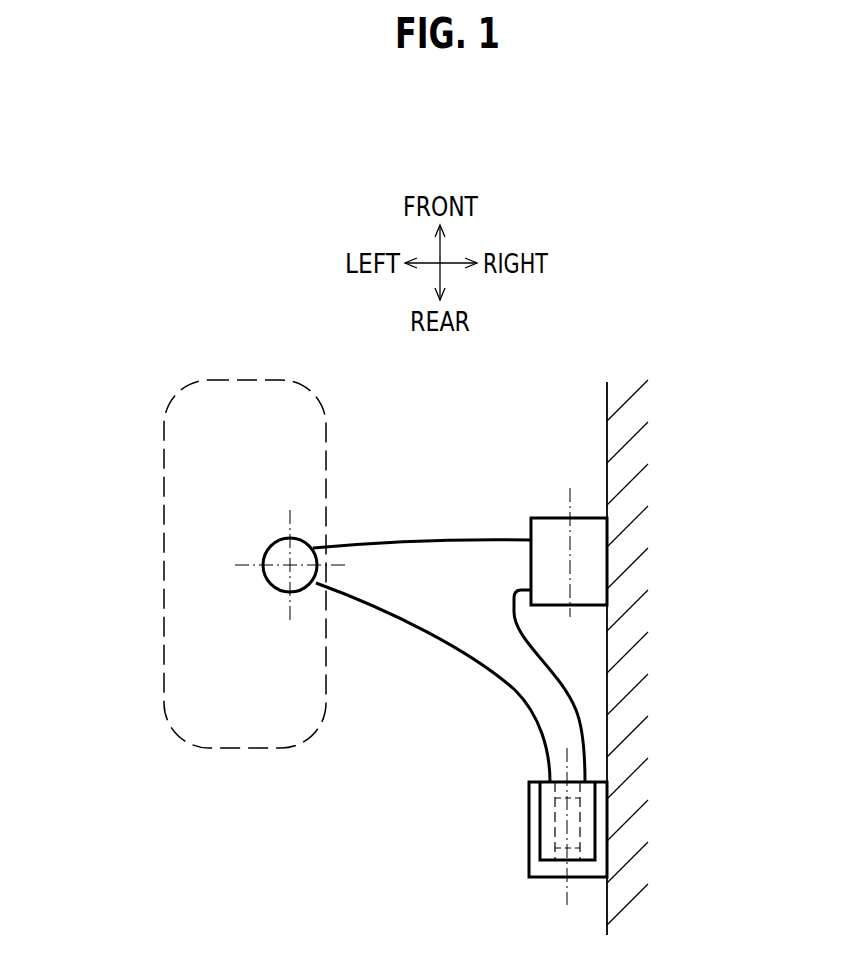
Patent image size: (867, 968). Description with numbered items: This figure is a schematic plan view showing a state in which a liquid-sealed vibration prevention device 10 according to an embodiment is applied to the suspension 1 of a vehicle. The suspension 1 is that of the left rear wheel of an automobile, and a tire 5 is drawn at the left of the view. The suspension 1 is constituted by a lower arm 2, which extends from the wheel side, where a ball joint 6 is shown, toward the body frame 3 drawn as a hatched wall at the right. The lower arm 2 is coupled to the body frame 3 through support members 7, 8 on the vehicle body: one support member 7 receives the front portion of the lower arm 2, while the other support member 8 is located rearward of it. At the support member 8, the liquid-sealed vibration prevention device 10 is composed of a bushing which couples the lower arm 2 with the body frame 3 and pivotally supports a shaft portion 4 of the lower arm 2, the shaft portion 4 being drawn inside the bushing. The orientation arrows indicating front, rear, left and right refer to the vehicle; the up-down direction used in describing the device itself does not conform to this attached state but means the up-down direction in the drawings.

The suspension 1 is at (457, 680).
The lower arm 2 is at (433, 530).
The body frame 3 is at (607, 408).
The shaft portion 4 is at (556, 812).
The tire 5 is at (164, 490).
The ball joint 6 is at (297, 540).
The support member 7 is at (552, 518).
The support member 8 is at (529, 800).
The liquid-sealed vibration prevention device 10 is at (541, 845).